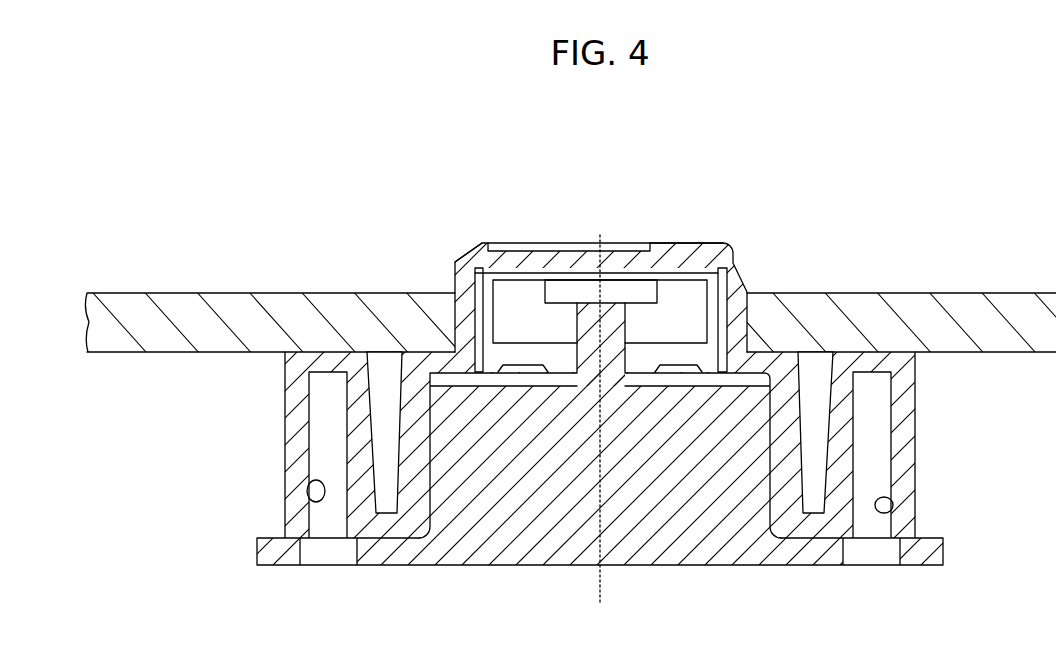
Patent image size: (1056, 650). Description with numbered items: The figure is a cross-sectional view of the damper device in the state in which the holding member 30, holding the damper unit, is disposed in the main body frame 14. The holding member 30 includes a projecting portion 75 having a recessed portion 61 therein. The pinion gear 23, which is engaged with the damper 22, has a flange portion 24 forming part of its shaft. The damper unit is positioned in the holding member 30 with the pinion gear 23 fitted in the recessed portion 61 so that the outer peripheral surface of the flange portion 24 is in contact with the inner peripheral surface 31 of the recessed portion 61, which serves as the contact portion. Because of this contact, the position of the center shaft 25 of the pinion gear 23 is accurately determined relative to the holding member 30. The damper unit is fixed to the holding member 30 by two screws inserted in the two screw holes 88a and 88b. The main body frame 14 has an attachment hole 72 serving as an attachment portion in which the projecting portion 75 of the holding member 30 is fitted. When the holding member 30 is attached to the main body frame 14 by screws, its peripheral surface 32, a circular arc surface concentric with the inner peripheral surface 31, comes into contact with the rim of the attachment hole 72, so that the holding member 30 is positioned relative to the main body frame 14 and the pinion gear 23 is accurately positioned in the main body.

The main body frame 14 is at (915, 312).
The damper 22 is at (735, 470).
The pinion gear 23 is at (682, 298).
The flange portion 24 is at (517, 348).
The center shaft 25 is at (604, 585).
The holding member 30 is at (292, 411).
The inner peripheral surface 31 is at (503, 272).
The peripheral surface 32 is at (455, 275).
The recessed portion 61 is at (712, 318).
The attachment hole 72 is at (474, 278).
The projecting portion 75 is at (672, 253).
The screw hole 88a is at (308, 500).
The screw hole 88b is at (893, 508).